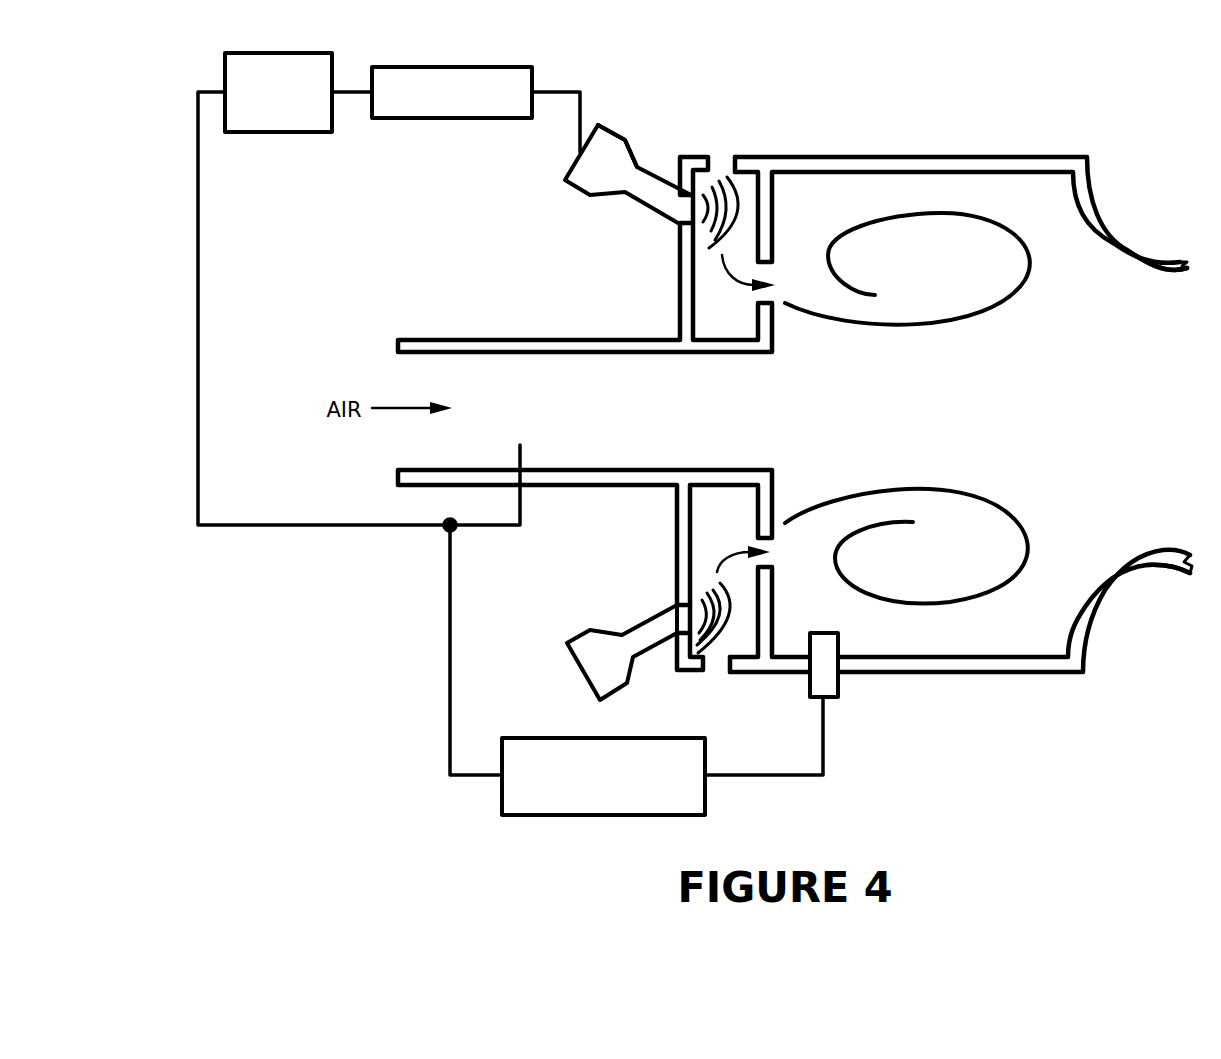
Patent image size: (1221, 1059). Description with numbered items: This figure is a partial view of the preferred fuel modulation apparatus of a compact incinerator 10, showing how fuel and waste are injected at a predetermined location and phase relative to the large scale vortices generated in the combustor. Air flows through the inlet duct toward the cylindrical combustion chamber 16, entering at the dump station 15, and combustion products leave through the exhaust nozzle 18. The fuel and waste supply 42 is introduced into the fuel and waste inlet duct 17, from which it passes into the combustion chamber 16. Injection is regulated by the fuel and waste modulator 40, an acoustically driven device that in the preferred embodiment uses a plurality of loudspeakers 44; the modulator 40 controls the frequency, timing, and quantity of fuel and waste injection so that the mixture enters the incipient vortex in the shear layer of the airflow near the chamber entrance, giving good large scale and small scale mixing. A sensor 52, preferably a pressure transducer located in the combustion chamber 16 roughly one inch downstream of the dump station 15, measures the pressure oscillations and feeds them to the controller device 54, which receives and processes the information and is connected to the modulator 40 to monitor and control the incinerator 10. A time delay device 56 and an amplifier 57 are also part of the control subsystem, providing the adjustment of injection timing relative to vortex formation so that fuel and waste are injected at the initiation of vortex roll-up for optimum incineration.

The incinerator 10 is at (1035, 138).
The dump station 15 is at (770, 470).
The combustion chamber 16 is at (866, 426).
The fuel and waste inlet duct 17 is at (706, 318).
The exhaust nozzle 18 is at (1175, 439).
The fuel and waste modulator 40 is at (635, 135).
The fuel and waste supply 42 is at (722, 168).
The loudspeakers 44 is at (580, 193).
The sensor 52 is at (842, 687).
The controller device 54 is at (675, 738).
The time delay device 56 is at (268, 133).
The amplifier 57 is at (498, 118).